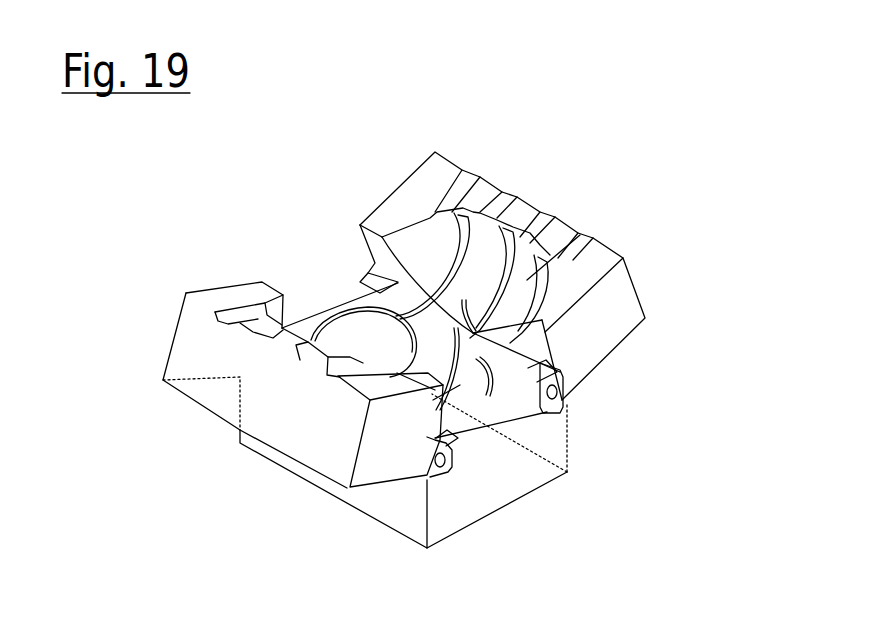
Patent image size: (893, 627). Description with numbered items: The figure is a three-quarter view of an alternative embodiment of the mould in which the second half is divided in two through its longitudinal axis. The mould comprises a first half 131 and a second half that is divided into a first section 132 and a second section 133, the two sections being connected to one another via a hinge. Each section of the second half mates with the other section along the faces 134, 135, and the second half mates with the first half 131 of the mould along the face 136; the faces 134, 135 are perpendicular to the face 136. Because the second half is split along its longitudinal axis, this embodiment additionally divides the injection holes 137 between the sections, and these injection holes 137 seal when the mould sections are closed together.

The first half 131 is at (535, 470).
The first section 132 is at (185, 355).
The second section 133 is at (593, 345).
The face 134 is at (228, 297).
The face 135 is at (398, 196).
The face 136 is at (377, 252).
The injection holes 137 is at (533, 228).